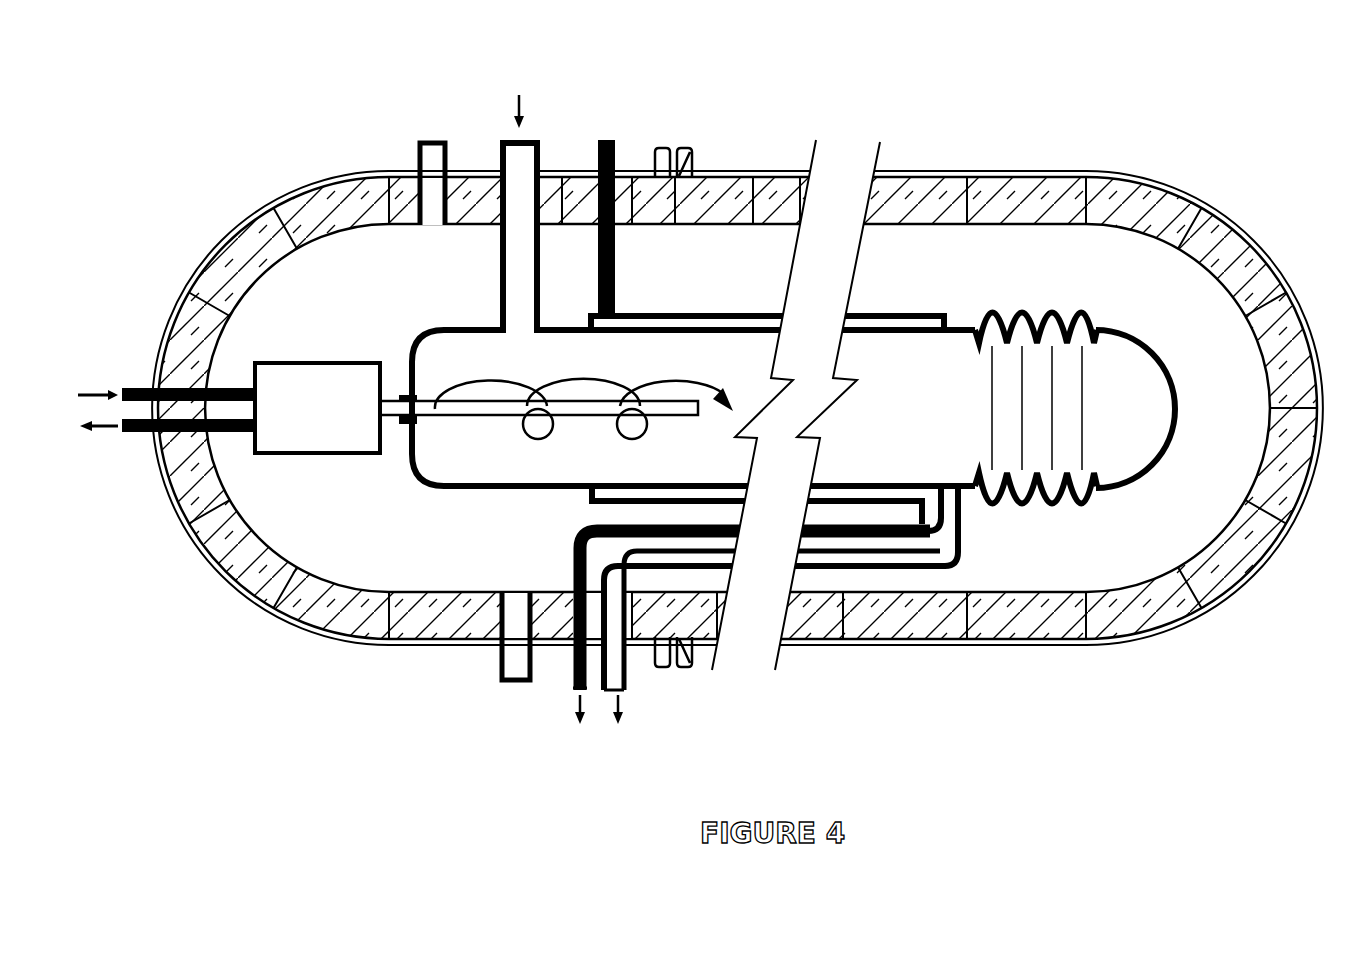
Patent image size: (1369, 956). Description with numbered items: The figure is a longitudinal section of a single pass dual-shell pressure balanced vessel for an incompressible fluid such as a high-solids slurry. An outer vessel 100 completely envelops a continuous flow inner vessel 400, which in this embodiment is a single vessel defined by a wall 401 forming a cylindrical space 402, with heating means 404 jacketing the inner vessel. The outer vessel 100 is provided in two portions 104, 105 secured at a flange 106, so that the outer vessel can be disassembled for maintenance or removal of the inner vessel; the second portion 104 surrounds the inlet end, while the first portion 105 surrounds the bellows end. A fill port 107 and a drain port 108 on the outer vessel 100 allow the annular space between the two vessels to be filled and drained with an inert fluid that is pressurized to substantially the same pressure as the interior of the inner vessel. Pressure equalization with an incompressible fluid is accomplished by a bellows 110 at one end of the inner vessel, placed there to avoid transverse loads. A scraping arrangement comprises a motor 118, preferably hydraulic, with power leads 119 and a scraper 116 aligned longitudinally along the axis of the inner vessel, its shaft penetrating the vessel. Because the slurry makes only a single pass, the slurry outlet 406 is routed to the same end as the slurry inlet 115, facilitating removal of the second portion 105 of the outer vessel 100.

The outer vessel 100 is at (737, 354).
The second portion of the outer vessel 104 is at (566, 170).
The first portion of the outer vessel 105 is at (897, 168).
The flange 106 is at (690, 147).
The fill port 107 is at (417, 147).
The drain port 108 is at (502, 660).
The bellows 110 is at (1052, 310).
The slurry inlet 115 is at (505, 147).
The scraper 116 is at (580, 408).
The motor 118 is at (302, 453).
The power leads 119 is at (175, 433).
The continuous flow inner vessel 400 is at (714, 272).
The wall 401 is at (747, 328).
The cylindrical space 402 is at (897, 353).
The heating means 404 is at (927, 312).
The slurry outlet 406 is at (626, 690).